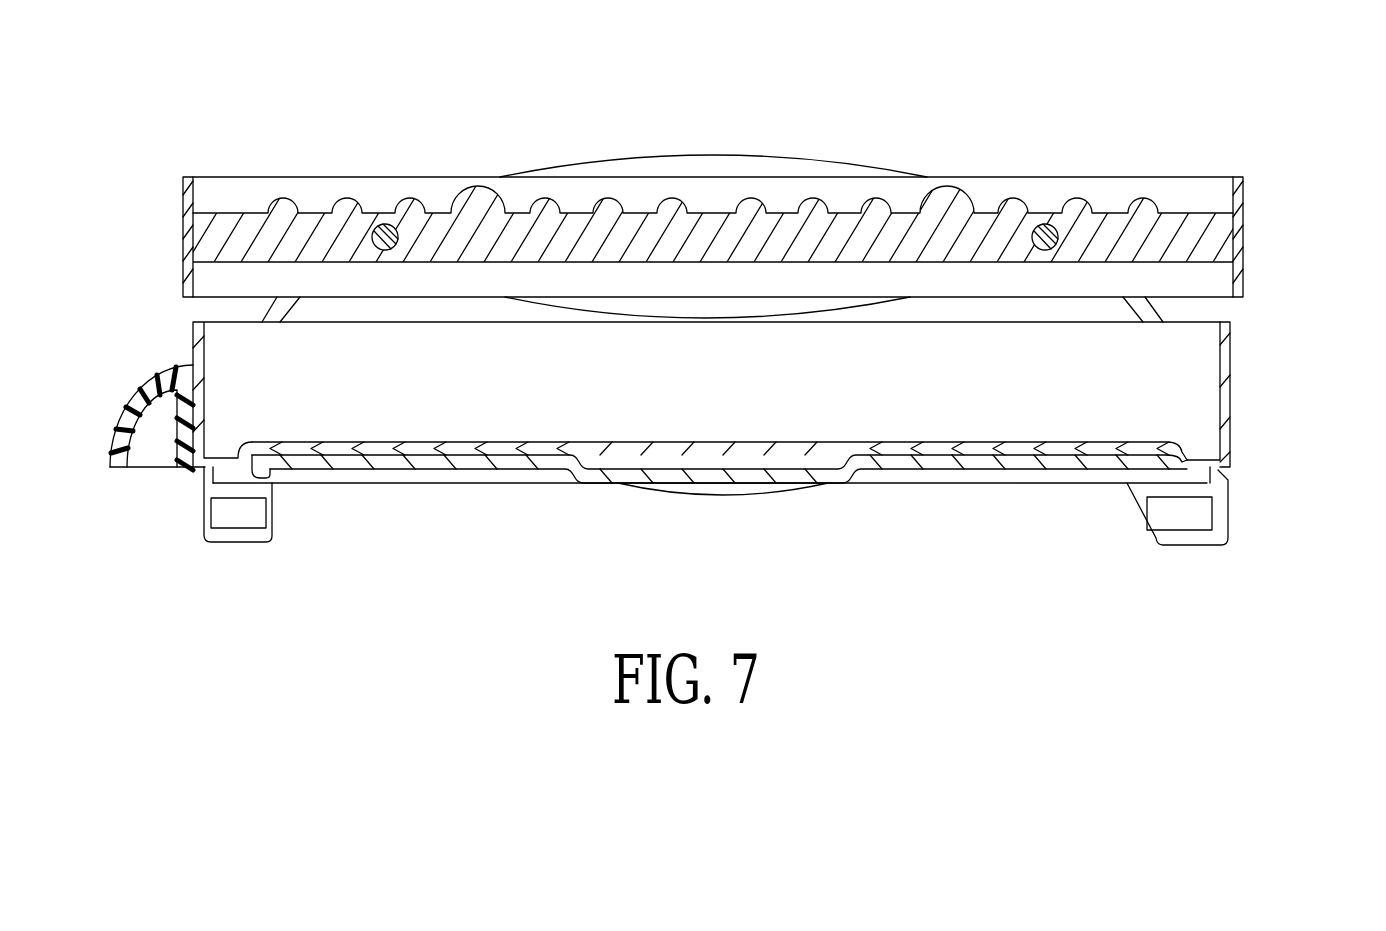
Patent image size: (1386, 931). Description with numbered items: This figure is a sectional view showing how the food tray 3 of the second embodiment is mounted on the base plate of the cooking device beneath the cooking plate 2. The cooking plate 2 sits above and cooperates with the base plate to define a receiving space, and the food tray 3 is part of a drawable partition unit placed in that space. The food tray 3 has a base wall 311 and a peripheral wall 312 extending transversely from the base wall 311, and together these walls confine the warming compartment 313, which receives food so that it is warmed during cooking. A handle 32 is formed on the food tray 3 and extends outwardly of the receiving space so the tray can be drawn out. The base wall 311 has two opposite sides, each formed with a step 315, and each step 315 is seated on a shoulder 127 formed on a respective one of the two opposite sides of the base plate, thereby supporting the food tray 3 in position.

The cooking plate 2 is at (1026, 128).
The food tray 3 is at (128, 342).
The handle 32 is at (145, 407).
The shoulder 127 is at (215, 460).
The base wall 311 is at (493, 447).
The peripheral wall 312 is at (1227, 398).
The warming compartment 313 is at (995, 405).
The step 315 is at (228, 458).